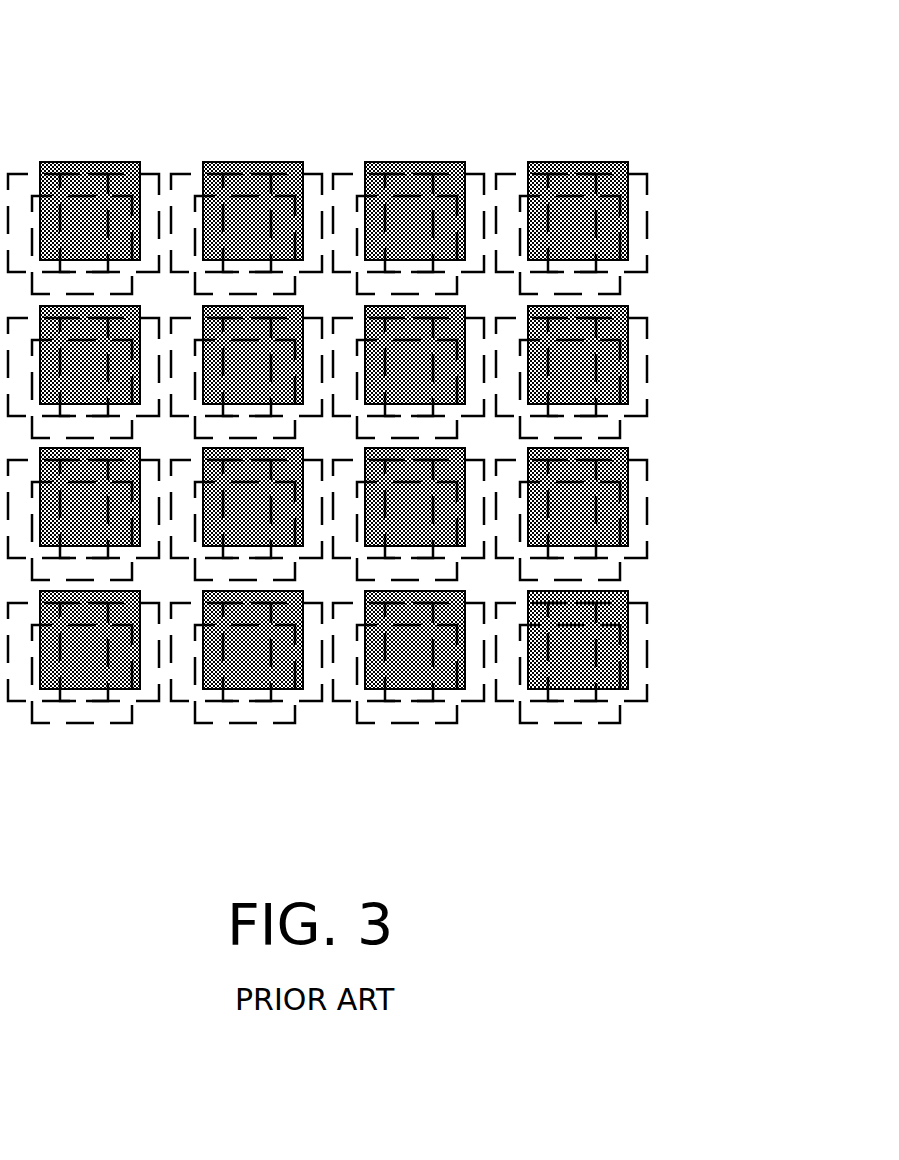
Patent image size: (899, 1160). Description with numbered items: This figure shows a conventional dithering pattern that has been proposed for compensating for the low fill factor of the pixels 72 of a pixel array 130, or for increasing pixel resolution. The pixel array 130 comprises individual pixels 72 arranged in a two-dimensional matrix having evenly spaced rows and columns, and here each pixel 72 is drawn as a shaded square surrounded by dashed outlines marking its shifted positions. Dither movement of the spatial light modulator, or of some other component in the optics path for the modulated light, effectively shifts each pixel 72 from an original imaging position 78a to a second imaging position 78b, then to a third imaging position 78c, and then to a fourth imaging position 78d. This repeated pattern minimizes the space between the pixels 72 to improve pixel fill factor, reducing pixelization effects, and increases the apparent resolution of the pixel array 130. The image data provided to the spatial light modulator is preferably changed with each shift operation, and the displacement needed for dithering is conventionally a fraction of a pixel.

The pixel array 130 is at (95, 34).
The pixel 72 is at (140, 162).
The original imaging position 78a is at (628, 594).
The second imaging position 78b is at (647, 649).
The third imaging position 78c is at (610, 724).
The fourth imaging position 78d is at (500, 699).